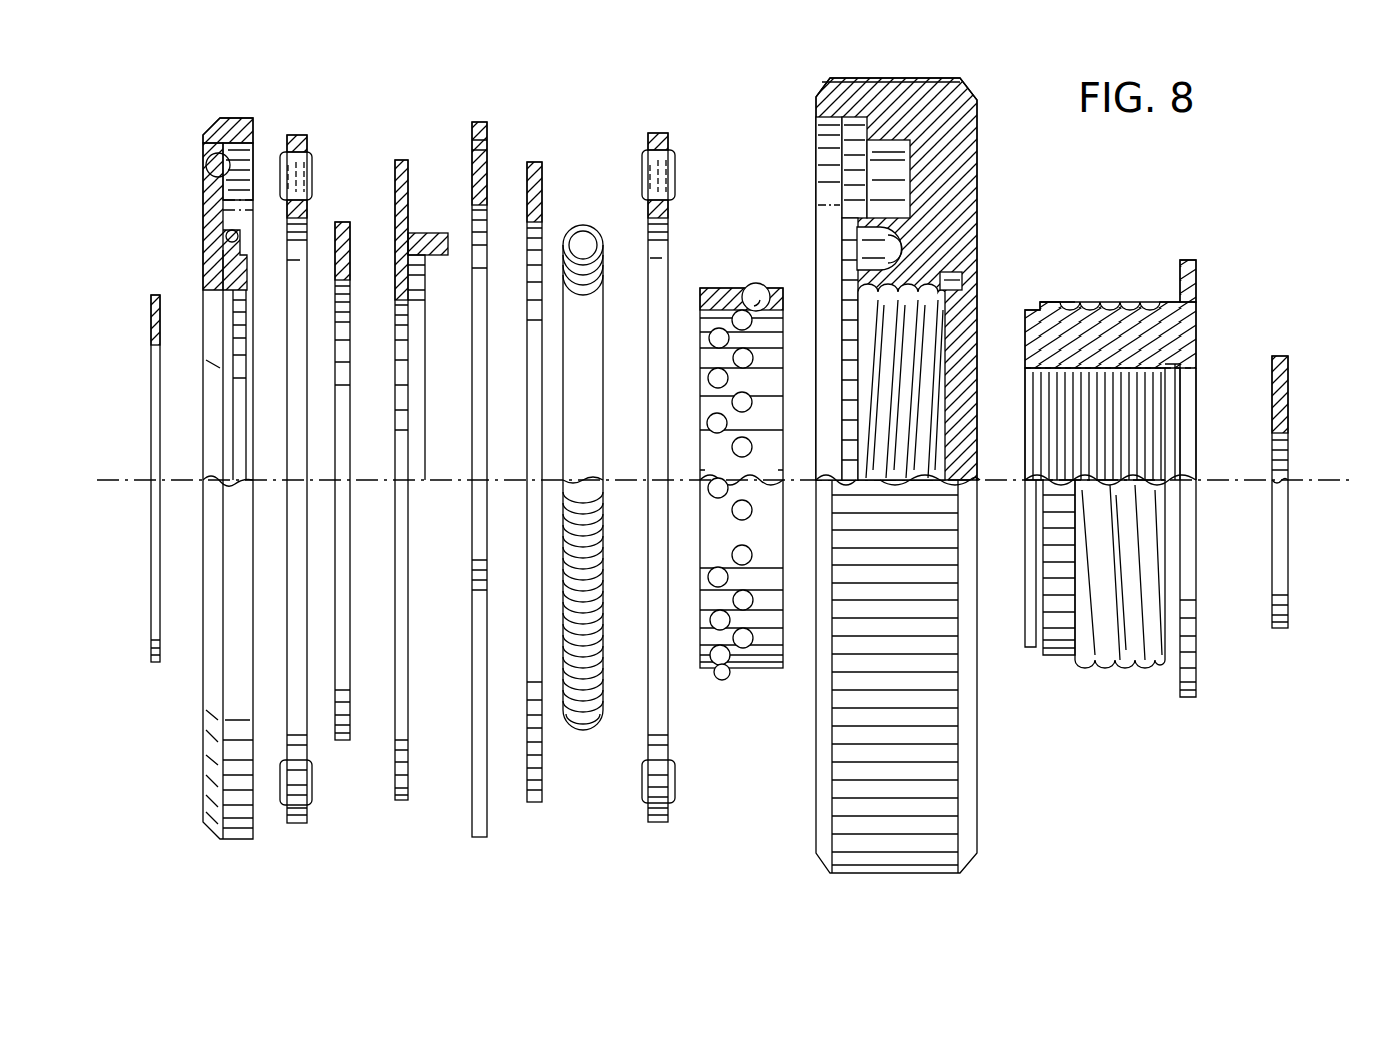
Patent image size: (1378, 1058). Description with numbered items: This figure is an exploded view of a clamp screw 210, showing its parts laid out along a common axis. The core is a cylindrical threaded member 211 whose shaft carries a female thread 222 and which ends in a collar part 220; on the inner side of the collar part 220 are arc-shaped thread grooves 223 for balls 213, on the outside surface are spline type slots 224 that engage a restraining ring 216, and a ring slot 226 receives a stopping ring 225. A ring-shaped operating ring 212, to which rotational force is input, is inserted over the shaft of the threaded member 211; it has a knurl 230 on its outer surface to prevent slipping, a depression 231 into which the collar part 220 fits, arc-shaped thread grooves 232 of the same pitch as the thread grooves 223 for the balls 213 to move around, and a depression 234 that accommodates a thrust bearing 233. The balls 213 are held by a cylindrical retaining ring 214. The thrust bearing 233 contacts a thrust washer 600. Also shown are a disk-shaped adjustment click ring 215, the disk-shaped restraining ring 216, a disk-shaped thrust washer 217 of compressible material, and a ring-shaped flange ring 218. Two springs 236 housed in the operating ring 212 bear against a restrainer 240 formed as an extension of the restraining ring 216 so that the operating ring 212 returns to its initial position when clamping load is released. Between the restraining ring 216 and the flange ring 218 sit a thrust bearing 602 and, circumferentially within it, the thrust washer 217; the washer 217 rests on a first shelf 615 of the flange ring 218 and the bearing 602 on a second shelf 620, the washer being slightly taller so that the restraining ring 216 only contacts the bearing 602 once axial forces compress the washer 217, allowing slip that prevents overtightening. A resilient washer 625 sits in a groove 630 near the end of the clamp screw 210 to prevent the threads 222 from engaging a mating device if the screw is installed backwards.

The clamp screw 210 is at (713, 74).
The threaded member 211 is at (1189, 680).
The operating ring 212 is at (980, 172).
The balls 213 is at (760, 283).
The retaining ring 214 is at (749, 454).
The adjustment click ring 215 is at (485, 122).
The restraining ring 216 is at (431, 449).
The thrust washer 217 is at (344, 222).
The flange ring 218 is at (189, 443).
The collar part 220 is at (1136, 466).
The female thread 222 is at (1143, 348).
The thread grooves 223 is at (1118, 298).
The spline type slots 224 is at (1058, 304).
The stopping ring 225 is at (155, 664).
The ring slot 226 is at (1034, 650).
The knurl 230 is at (932, 451).
The depression 231 is at (961, 260).
The thread grooves 232 is at (959, 292).
The thrust bearing 233 is at (658, 133).
The depression 234 is at (880, 151).
The springs 236 is at (567, 735).
The restrainer 240 is at (434, 233).
The thrust washer 600 is at (538, 164).
The thrust bearing 602 is at (296, 135).
The first shelf 615 is at (226, 237).
The second shelf 620 is at (206, 161).
The resilient washer 625 is at (1290, 388).
The groove 630 is at (1179, 364).